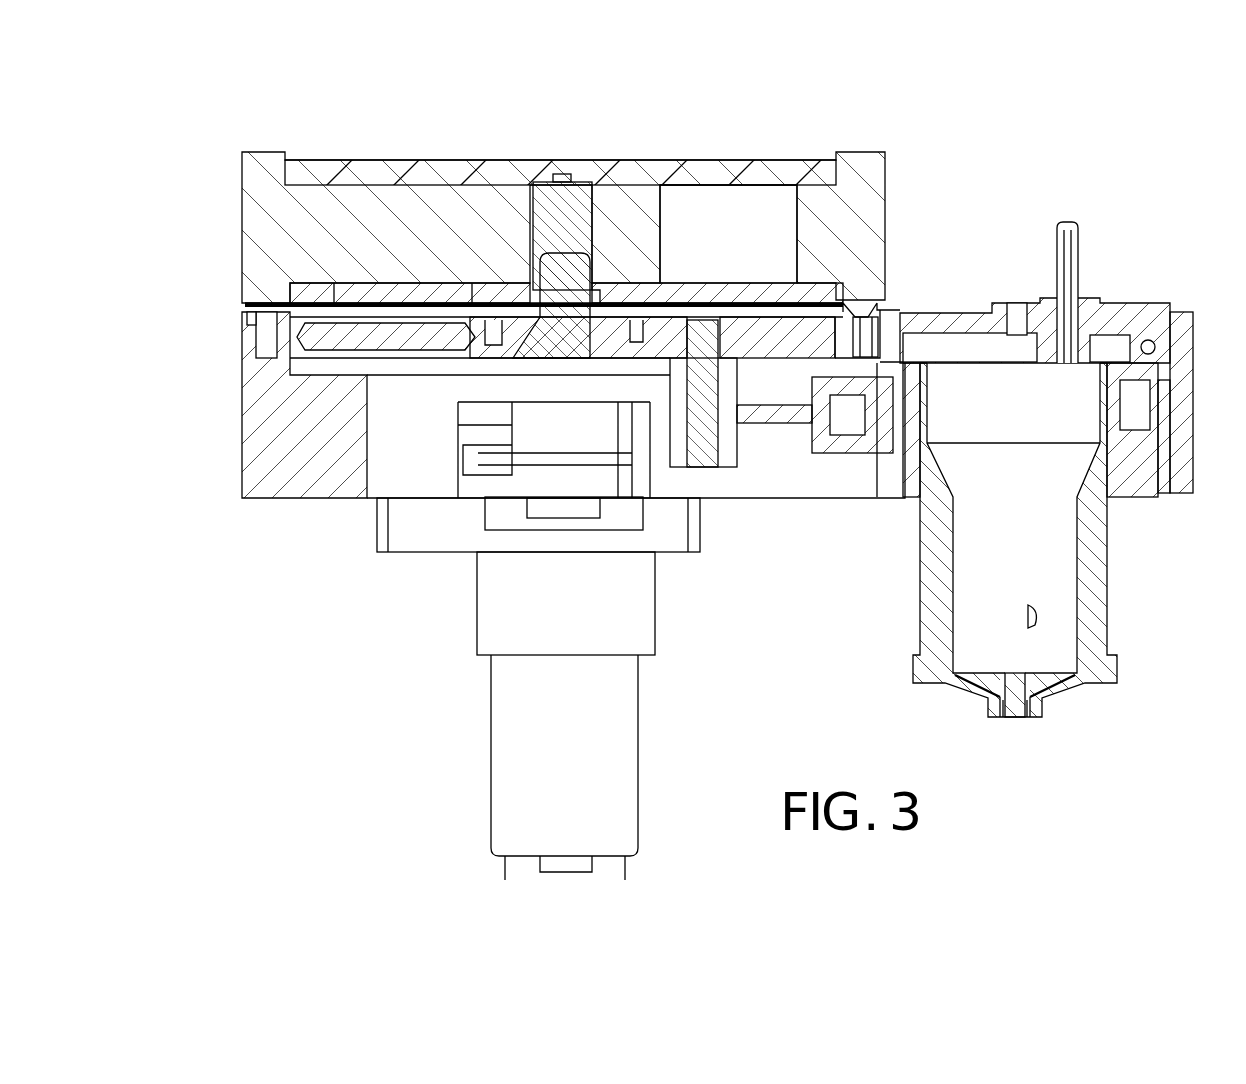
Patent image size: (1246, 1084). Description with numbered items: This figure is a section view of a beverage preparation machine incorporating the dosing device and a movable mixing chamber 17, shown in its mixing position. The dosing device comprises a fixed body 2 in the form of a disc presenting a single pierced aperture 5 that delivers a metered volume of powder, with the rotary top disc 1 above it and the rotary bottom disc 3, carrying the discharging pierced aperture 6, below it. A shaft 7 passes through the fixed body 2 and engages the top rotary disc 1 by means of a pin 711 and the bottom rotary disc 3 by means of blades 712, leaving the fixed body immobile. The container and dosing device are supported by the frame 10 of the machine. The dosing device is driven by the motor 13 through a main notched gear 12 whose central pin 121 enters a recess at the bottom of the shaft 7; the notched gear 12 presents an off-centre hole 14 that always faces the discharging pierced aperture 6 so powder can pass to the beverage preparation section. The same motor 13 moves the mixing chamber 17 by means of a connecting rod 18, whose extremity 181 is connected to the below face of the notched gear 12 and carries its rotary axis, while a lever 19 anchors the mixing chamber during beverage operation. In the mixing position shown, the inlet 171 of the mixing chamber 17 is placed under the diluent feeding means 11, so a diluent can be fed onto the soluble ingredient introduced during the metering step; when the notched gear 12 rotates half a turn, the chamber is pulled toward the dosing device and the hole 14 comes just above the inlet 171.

The rotary top disc 1 is at (733, 165).
The fixed body 2 is at (268, 236).
The rotary bottom disc 3 is at (296, 298).
The single pierced aperture 5 is at (768, 207).
The discharging pierced aperture 6 is at (430, 290).
The shaft 7 is at (565, 208).
The frame 10 is at (262, 457).
The diluent feeding means 11 is at (1072, 227).
The main notched gear 12 is at (807, 332).
The motor 13 is at (508, 763).
The off-centre hole 14 is at (352, 340).
The mixing chamber 17 is at (1100, 593).
The connecting rod 18 is at (770, 413).
The lever 19 is at (913, 427).
The central pin 121 is at (563, 290).
The mixing chamber inlet 171 is at (1037, 380).
The extremity of the connecting rod 181 is at (710, 437).
The pin 711 is at (560, 178).
The blades 712 is at (598, 290).